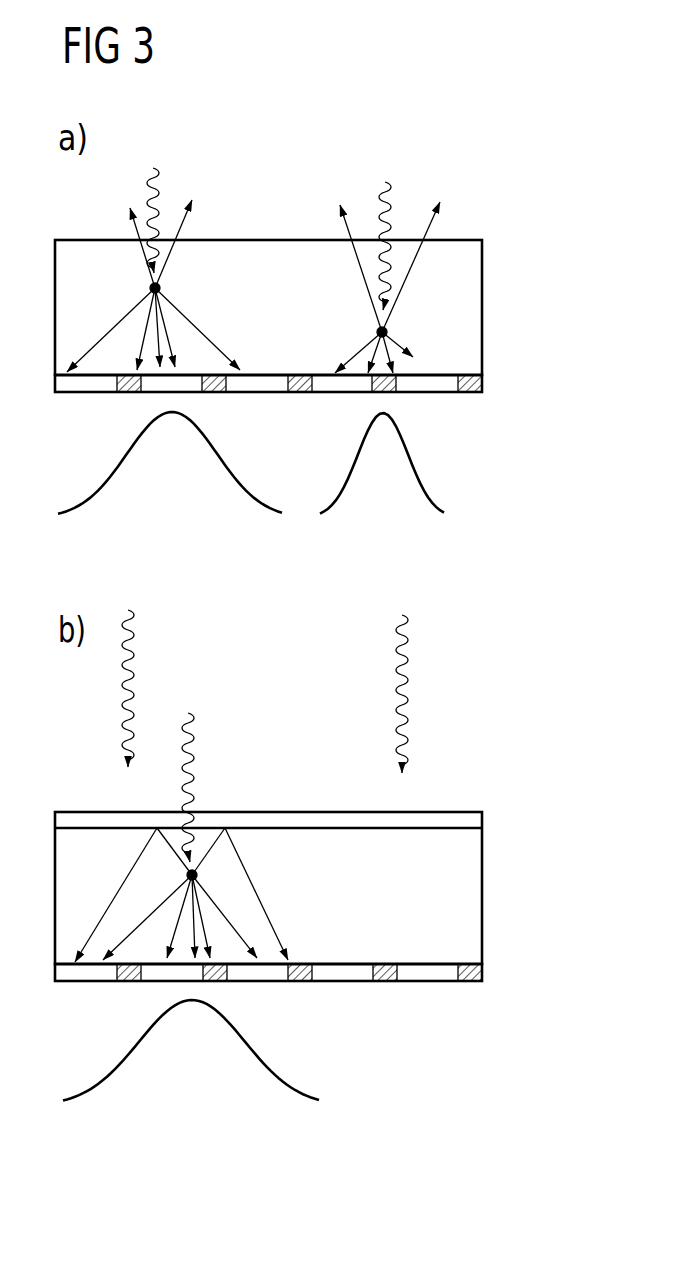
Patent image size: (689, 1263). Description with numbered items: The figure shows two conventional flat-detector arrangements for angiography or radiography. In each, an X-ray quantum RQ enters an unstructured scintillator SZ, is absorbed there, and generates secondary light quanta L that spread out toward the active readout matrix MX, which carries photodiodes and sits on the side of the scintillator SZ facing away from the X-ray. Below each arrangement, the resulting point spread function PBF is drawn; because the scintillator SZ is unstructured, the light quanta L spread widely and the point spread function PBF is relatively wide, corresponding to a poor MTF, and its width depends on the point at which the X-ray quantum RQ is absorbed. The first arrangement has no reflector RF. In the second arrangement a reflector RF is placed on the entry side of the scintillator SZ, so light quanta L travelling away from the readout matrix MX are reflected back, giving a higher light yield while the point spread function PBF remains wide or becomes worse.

The X-ray quantum RQ is at (156, 173).
The light quanta L is at (437, 287).
The scintillator SZ is at (470, 335).
The active readout matrix MX is at (488, 380).
The point spread function PBF is at (430, 467).
The reflector RF is at (331, 820).